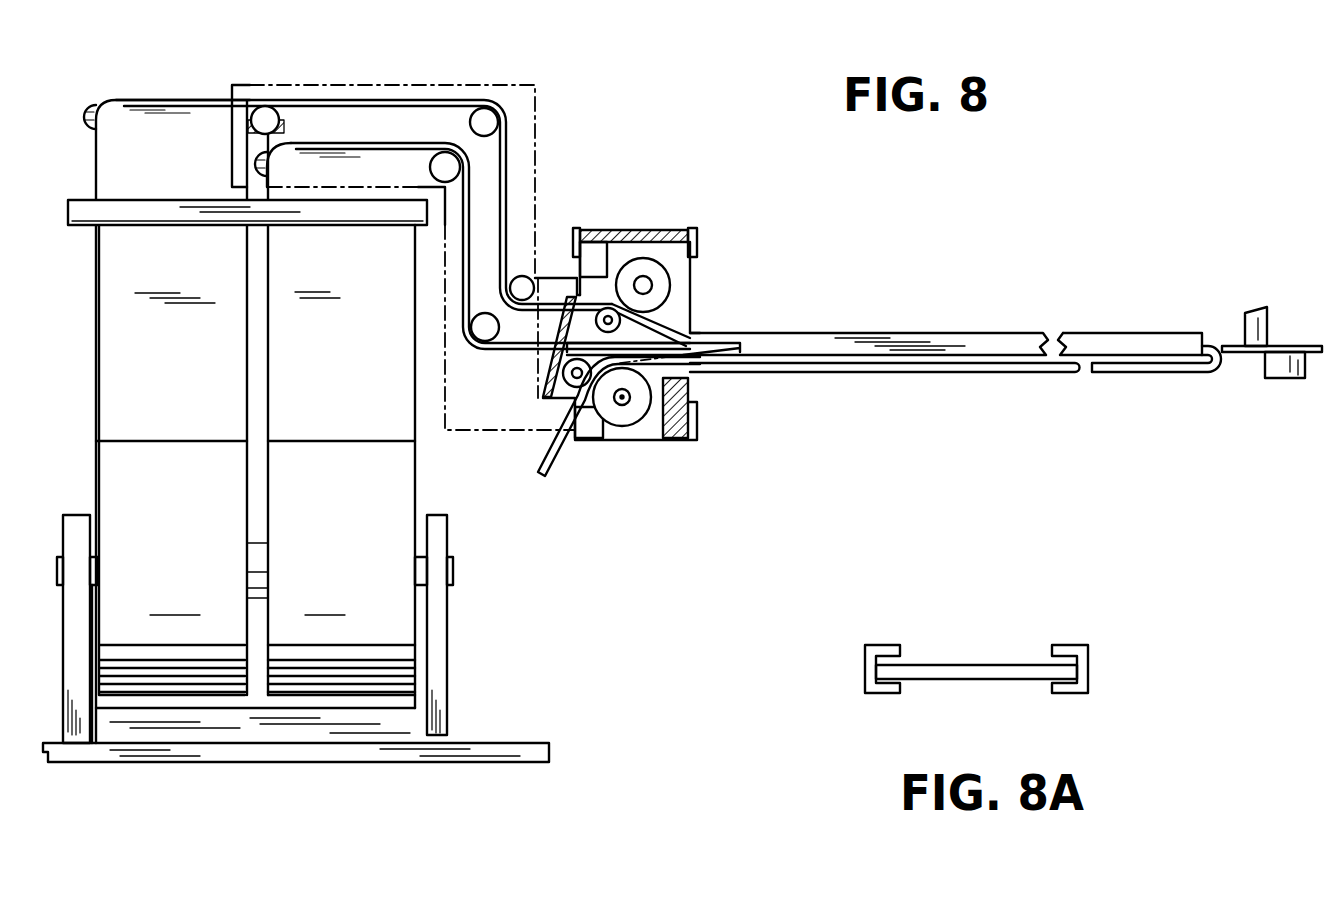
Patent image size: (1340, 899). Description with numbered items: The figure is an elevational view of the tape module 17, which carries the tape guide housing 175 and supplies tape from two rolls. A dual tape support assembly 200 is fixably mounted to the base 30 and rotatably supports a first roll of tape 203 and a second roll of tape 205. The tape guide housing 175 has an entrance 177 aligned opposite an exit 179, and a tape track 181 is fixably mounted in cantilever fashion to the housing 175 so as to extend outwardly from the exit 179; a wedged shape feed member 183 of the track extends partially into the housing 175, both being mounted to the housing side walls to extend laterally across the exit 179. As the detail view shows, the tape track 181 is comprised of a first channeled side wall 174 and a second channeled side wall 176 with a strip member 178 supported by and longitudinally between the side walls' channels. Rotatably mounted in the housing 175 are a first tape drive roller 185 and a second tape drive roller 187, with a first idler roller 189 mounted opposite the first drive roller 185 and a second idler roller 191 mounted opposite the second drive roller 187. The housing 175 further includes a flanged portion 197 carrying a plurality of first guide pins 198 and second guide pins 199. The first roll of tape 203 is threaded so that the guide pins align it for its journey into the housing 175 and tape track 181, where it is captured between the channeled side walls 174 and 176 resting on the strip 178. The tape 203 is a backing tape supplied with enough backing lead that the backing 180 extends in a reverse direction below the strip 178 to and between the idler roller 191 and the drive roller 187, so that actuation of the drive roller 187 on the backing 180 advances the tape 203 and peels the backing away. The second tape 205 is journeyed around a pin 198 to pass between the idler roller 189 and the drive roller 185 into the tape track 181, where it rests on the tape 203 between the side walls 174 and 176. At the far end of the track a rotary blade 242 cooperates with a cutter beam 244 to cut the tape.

In FIG. 8, the tape module 17 is at (858, 464).
In FIG. 8, the base 30 is at (538, 743).
In FIG. 8, the first channeled side wall 174 is at (1090, 335).
In FIG. 8A, the first channeled side wall 174 is at (882, 645).
In FIG. 8, the tape guide housing 175 is at (662, 228).
In FIG. 8A, the second channeled side wall 176 is at (1077, 645).
In FIG. 8, the entrance 177 is at (577, 228).
In FIG. 8A, the strip member 178 is at (992, 683).
In FIG. 8, the exit 179 is at (690, 272).
In FIG. 8, the backing 180 is at (550, 472).
In FIG. 8, the tape track 181 is at (933, 305).
In FIG. 8A, the tape track 181 is at (1015, 620).
In FIG. 8, the wedged shape feed member 183 is at (725, 353).
In FIG. 8, the first tape drive roller 185 is at (688, 305).
In FIG. 8, the second tape drive roller 187 is at (640, 420).
In FIG. 8, the first idler roller 189 is at (630, 330).
In FIG. 8, the second idler roller 191 is at (547, 410).
In FIG. 8, the flanged portion 197 is at (536, 88).
In FIG. 8, the first guide pins 198 is at (272, 108).
In FIG. 8, the second guide pins 199 is at (443, 162).
In FIG. 8, the dual tape support assembly 200 is at (447, 660).
In FIG. 8, the first roll of tape 203 is at (416, 481).
In FIG. 8, the second roll of tape 205 is at (97, 486).
In FIG. 8, the rotary blade 242 is at (1262, 305).
In FIG. 8, the cutter beam 244 is at (1290, 380).